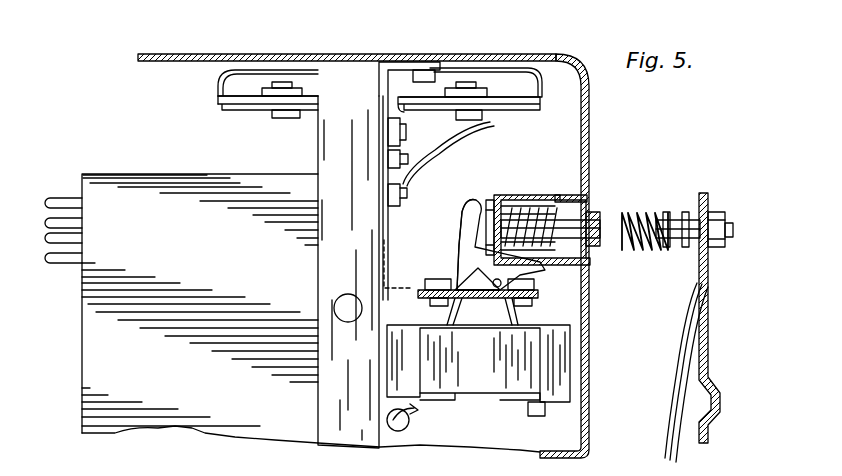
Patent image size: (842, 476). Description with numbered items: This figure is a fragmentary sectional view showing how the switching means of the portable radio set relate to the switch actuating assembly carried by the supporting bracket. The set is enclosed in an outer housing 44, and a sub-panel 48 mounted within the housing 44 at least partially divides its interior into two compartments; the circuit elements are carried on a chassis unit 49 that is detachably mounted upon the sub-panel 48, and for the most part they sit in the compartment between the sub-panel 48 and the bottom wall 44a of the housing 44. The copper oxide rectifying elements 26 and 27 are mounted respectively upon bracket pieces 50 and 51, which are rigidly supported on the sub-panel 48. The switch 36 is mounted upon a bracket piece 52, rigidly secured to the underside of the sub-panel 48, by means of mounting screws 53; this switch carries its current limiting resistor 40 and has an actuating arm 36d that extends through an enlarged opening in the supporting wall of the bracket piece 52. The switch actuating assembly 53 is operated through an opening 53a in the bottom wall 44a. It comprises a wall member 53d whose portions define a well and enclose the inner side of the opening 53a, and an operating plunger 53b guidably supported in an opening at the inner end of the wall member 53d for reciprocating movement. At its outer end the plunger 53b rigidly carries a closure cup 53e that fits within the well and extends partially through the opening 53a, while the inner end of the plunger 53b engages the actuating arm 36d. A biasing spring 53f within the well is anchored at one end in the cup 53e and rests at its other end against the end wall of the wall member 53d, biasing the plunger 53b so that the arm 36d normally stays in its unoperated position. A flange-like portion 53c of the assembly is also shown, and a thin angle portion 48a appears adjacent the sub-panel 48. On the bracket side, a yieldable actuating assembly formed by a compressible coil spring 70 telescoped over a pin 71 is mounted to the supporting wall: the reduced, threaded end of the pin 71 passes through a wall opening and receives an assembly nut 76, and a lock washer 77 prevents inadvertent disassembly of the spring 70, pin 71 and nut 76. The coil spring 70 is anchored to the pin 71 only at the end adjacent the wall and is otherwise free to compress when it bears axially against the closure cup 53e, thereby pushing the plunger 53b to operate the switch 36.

The copper oxide rectifying element 26 is at (250, 104).
The copper oxide rectifying element 27 is at (540, 103).
The switch 36 is at (484, 382).
The actuating arm 36d is at (458, 212).
The current limiting resistor 40 is at (410, 420).
The housing 44 is at (234, 53).
The bottom wall 44a is at (589, 368).
The sub-panel 48 is at (370, 442).
The angle bracket 48a is at (400, 62).
The chassis unit 49 is at (82, 377).
The bracket piece 50 is at (222, 82).
The bracket piece 51 is at (538, 74).
The bracket piece 52 is at (416, 288).
The switch actuating assembly 53 is at (516, 171).
The opening 53a is at (590, 212).
The operating plunger 53b is at (584, 195).
The flange 53c is at (486, 215).
The wall member 53d is at (548, 188).
The closure cup 53e is at (600, 220).
The biasing spring 53f is at (526, 212).
The compressible coil spring 70 is at (636, 250).
The pin 71 is at (674, 222).
The assembly nut 76 is at (720, 216).
The lock washer 77 is at (710, 207).